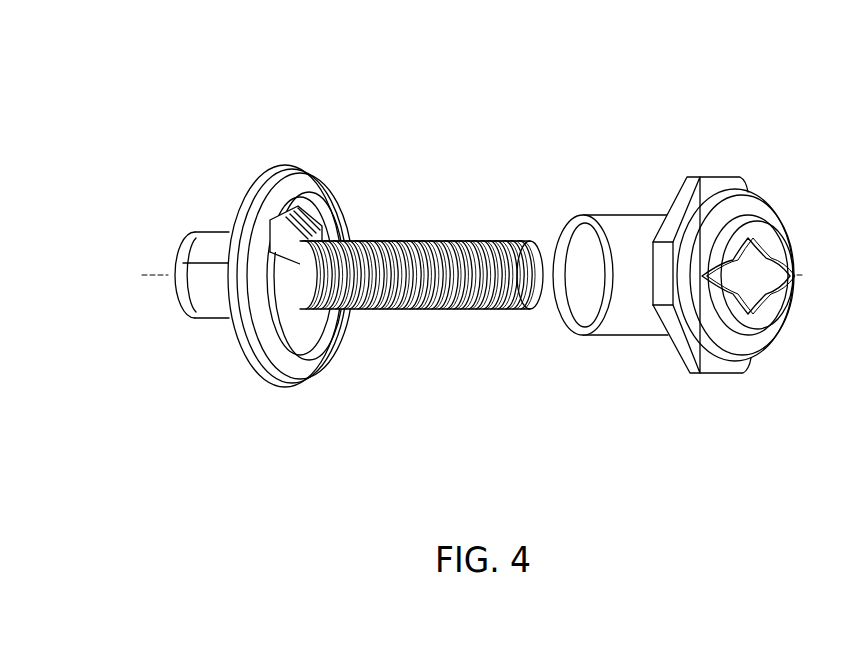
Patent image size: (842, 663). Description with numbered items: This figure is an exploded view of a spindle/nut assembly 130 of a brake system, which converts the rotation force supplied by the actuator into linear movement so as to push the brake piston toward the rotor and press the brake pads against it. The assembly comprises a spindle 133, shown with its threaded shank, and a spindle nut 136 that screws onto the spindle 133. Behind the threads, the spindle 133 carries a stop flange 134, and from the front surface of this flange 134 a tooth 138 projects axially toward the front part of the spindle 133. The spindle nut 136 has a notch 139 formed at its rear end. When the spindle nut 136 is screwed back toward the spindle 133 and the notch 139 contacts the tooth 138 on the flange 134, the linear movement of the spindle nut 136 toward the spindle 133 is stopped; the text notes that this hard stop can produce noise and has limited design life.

The spindle/nut assembly 130 is at (140, 42).
The spindle 133 is at (440, 207).
The stop flange 134 is at (298, 183).
The spindle nut 136 is at (704, 147).
The tooth 138 is at (275, 242).
The notch 139 is at (566, 236).